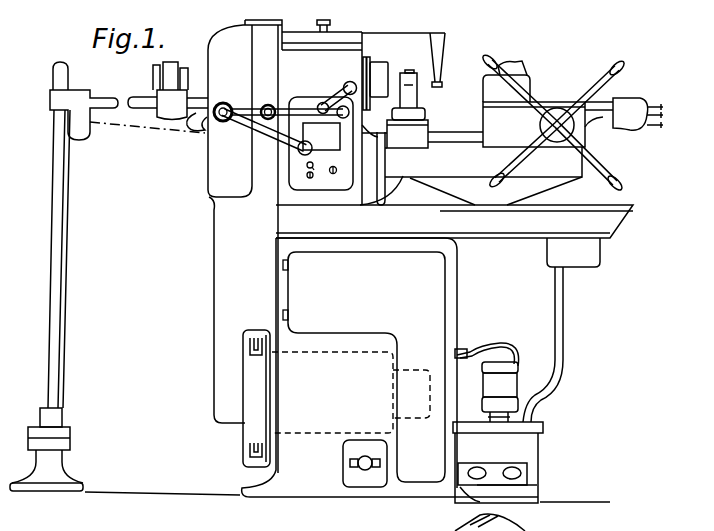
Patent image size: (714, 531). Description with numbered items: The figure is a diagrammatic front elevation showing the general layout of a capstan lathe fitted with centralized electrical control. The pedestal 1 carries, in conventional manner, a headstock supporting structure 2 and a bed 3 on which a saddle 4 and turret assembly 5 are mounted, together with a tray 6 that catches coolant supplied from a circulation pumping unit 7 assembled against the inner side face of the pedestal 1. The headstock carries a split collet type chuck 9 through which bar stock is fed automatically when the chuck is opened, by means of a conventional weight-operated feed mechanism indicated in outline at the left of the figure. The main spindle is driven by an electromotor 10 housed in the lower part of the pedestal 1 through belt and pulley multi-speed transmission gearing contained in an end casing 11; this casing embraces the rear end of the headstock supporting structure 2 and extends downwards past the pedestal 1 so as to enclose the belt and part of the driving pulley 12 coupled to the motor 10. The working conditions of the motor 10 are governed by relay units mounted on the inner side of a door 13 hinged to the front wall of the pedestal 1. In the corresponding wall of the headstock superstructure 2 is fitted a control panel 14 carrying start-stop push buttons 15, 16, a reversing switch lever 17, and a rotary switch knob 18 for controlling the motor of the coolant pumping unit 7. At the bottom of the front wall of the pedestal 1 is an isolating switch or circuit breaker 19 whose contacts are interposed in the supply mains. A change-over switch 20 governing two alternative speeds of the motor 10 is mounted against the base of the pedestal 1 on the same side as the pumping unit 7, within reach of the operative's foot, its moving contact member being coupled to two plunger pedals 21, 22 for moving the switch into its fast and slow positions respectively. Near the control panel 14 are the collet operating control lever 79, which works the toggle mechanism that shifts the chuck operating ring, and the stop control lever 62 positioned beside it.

The pedestal 1 is at (347, 384).
The headstock supporting structure 2 is at (363, 112).
The bed 3 is at (471, 168).
The saddle 4 is at (407, 110).
The turret assembly 5 is at (572, 122).
The tray 6 is at (454, 236).
The circulation pumping unit 7 is at (508, 385).
The split collet type chuck 9 is at (382, 77).
The electromotor 10 is at (342, 403).
The end casing 11 is at (245, 246).
The driving pulley 12 is at (255, 432).
The door 13 is at (364, 367).
The control panel 14 is at (300, 162).
The start-stop push button 15 is at (313, 168).
The start-stop push button 16 is at (309, 178).
The reversing switch lever 17 is at (333, 107).
The rotary switch knob 18 is at (335, 173).
The isolating switch or circuit breaker 19 is at (367, 483).
The change-over switch 20 is at (518, 495).
The plunger pedal 21 is at (473, 467).
The plunger pedal 22 is at (517, 473).
The stop control lever 62 is at (263, 130).
The control lever 79 is at (306, 110).